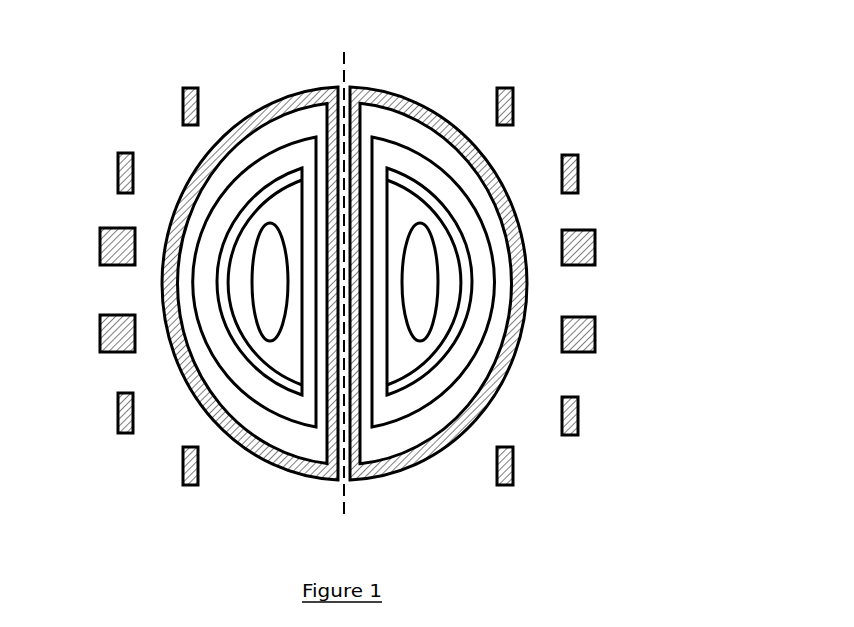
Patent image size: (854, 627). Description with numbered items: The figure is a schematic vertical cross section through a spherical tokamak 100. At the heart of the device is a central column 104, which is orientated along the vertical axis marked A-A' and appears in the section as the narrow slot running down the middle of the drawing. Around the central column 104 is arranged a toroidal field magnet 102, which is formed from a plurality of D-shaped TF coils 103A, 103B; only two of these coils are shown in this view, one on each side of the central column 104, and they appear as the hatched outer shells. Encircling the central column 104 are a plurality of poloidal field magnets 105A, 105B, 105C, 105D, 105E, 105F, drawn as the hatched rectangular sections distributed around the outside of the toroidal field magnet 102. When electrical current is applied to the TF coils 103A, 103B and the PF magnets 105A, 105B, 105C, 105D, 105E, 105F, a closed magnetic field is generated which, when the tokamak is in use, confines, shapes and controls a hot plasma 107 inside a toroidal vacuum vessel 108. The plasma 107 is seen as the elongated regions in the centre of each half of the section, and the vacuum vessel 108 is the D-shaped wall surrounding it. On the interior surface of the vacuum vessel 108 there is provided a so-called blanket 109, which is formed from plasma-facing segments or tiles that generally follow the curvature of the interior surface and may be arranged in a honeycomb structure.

The spherical tokamak 100 is at (149, 47).
The toroidal field magnet 102 is at (430, 86).
The D-shaped TF coil 103A is at (187, 173).
The D-shaped TF coil 103B is at (492, 170).
The central column 104 is at (338, 112).
The poloidal field magnet 105A is at (513, 103).
The poloidal field magnet 105B is at (578, 176).
The poloidal field magnet 105C is at (595, 248).
The poloidal field magnet 105D is at (595, 333).
The poloidal field magnet 105E is at (578, 421).
The poloidal field magnet 105F is at (513, 467).
The plasma 107 is at (268, 317).
The vacuum vessel 108 is at (215, 347).
The blanket 109 is at (420, 380).